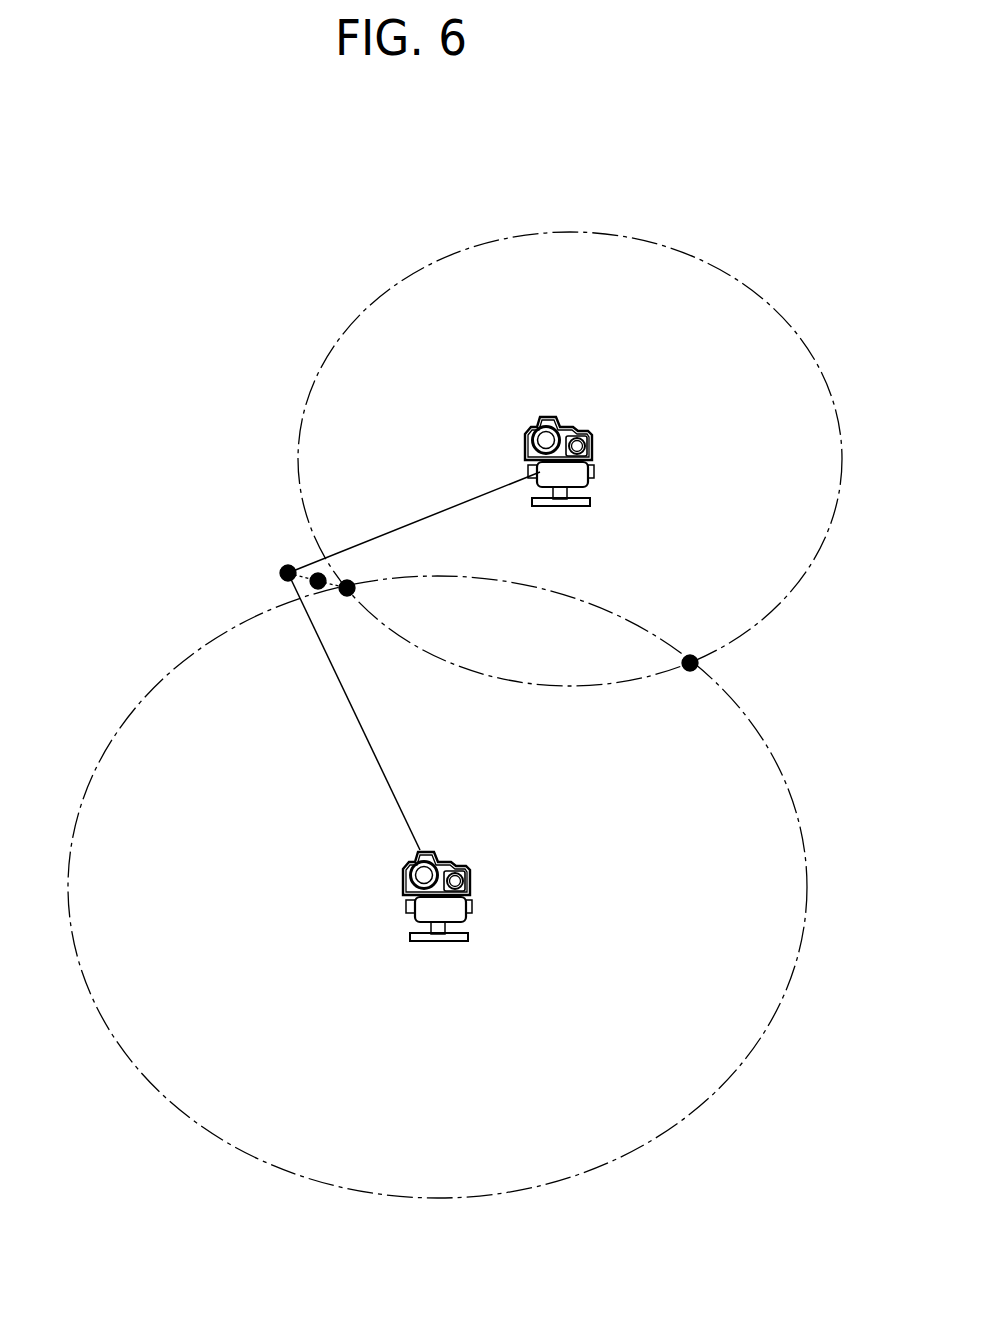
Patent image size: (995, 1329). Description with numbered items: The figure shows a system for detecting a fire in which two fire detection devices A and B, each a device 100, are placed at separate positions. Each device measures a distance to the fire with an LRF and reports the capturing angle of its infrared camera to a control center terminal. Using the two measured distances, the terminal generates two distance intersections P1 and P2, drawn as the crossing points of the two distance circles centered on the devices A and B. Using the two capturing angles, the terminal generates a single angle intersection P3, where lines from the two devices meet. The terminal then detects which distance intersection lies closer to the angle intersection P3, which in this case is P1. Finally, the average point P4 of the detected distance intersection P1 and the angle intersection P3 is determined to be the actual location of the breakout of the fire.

The camera apparatus 100 is at (593, 463).
The fire detection device A is at (562, 521).
The fire detection device B is at (437, 959).
The distance intersection P1 is at (366, 572).
The distance intersection P2 is at (685, 682).
The angle intersection P3 is at (257, 583).
The average point P4 is at (336, 546).